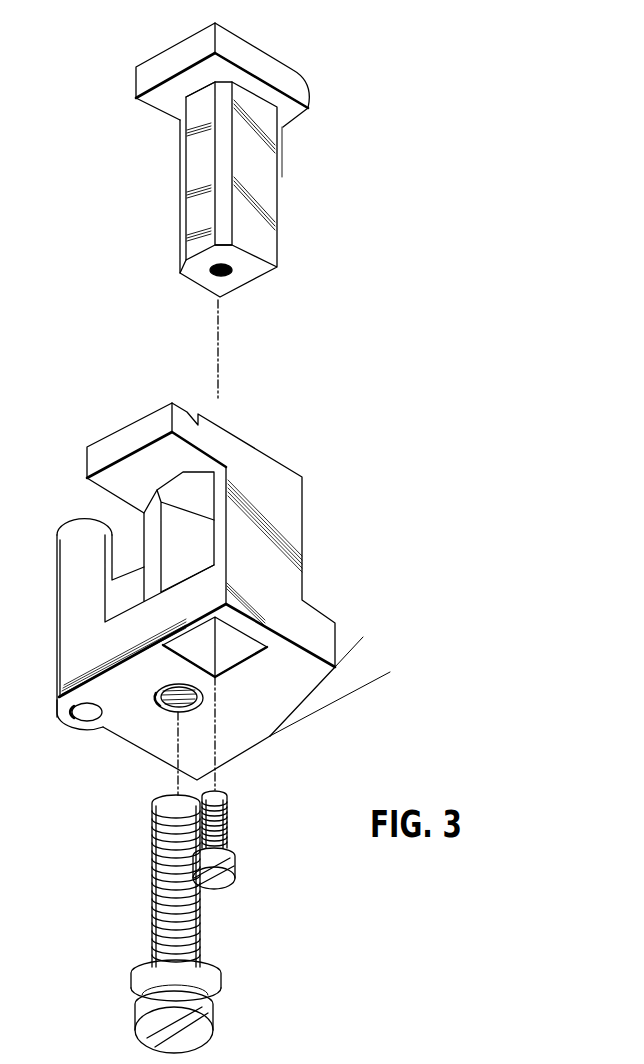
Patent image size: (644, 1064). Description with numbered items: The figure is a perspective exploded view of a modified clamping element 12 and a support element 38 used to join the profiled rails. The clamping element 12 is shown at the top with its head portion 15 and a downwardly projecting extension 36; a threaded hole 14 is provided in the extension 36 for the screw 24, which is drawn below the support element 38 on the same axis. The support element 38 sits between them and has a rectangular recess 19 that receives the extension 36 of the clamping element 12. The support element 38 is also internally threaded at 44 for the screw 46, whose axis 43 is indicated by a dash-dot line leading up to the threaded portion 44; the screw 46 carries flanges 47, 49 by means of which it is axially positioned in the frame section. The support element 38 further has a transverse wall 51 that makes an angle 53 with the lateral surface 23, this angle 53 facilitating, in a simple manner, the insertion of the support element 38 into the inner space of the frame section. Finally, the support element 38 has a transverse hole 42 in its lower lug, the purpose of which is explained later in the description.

The clamping element 12 is at (224, 165).
The head plate underside 15 is at (157, 97).
The extension 36 is at (267, 188).
The threaded hole 14 is at (232, 270).
The support element 38 is at (215, 599).
The rectangular recess 19 is at (240, 633).
The transverse hole 42 is at (75, 721).
The internal thread 44 is at (172, 710).
The axis of hole 43 is at (177, 777).
The lateral surface 23 is at (252, 750).
The transverse wall 51 is at (312, 693).
The angle 53 is at (398, 700).
The screw 24 is at (227, 822).
The screw 46 is at (157, 924).
The flange 49 is at (135, 982).
The flange 47 is at (135, 1018).